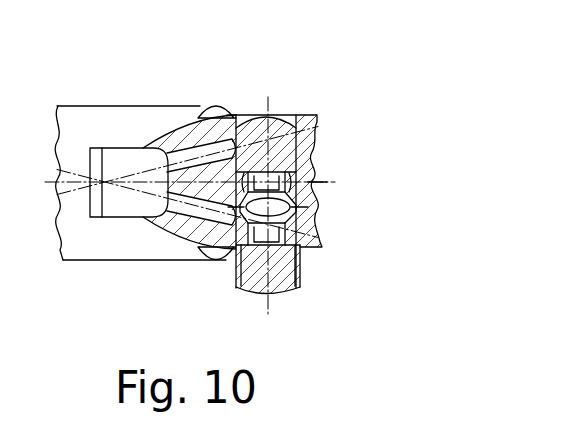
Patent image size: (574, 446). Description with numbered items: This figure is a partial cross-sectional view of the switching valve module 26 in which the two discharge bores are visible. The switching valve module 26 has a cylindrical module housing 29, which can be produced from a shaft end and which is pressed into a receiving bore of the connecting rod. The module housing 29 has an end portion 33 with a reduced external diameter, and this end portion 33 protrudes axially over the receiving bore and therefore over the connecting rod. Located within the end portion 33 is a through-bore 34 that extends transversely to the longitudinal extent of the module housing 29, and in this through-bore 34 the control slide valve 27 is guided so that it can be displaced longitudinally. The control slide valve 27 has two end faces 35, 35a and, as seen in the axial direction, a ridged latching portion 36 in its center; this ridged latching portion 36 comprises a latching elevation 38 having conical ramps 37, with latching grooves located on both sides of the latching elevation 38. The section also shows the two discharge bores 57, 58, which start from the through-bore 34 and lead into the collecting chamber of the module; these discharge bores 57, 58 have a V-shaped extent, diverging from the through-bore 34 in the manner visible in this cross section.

The switching valve module 26 is at (63, 262).
The control slide valve 27 is at (285, 279).
The module housing 29 is at (203, 117).
The end portion 33 is at (305, 116).
The through-bore 34 is at (300, 146).
The end face 35 is at (270, 116).
The end face 35a is at (276, 296).
The ridged latching portion 36 is at (290, 207).
The conical ramps 37 is at (298, 189).
The latching elevation 38 is at (233, 257).
The discharge bore 57 is at (170, 120).
The discharge bore 58 is at (164, 238).